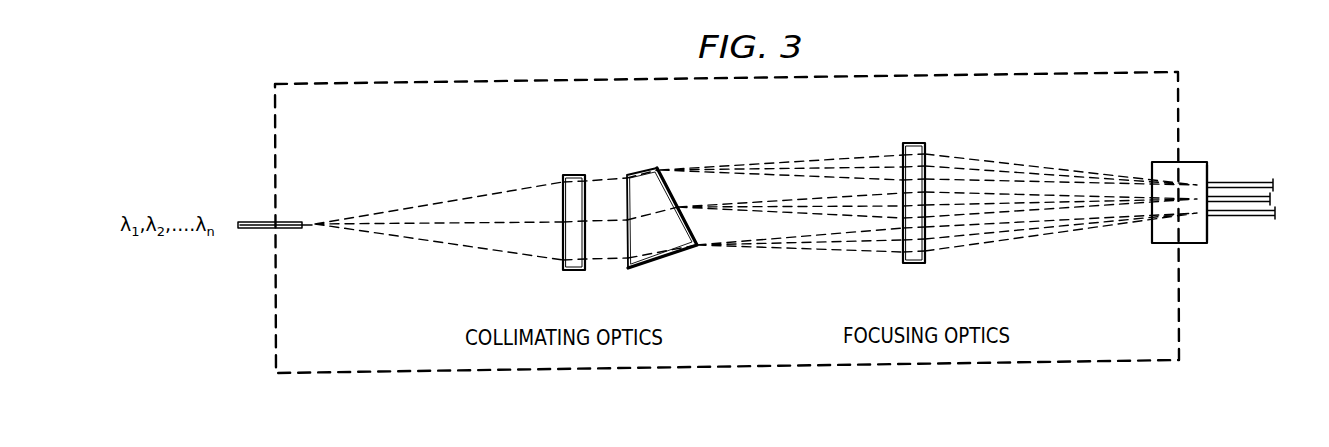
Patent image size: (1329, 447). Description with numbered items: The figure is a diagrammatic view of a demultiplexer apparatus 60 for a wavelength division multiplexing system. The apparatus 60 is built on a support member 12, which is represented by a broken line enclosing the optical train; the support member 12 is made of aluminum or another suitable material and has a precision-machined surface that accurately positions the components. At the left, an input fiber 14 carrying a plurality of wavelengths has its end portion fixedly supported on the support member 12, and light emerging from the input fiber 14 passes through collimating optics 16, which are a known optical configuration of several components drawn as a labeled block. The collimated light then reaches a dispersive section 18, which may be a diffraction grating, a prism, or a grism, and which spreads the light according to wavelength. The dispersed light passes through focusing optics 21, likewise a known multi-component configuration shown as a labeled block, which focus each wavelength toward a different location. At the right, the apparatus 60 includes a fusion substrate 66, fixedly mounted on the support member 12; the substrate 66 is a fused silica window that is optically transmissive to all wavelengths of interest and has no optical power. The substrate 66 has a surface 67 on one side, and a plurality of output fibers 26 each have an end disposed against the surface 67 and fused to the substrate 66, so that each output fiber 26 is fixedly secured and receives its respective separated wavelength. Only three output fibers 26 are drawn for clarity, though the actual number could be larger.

The demultiplexer apparatus 60 is at (592, 52).
The support member 12 is at (271, 131).
The input fiber 14 is at (258, 222).
The collimating optics 16 is at (577, 272).
The dispersive section 18 is at (641, 170).
The focusing optics 21 is at (921, 266).
The fusion substrate 66 is at (1163, 164).
The surface 67 is at (1215, 170).
The output fibers 26 is at (1256, 181).